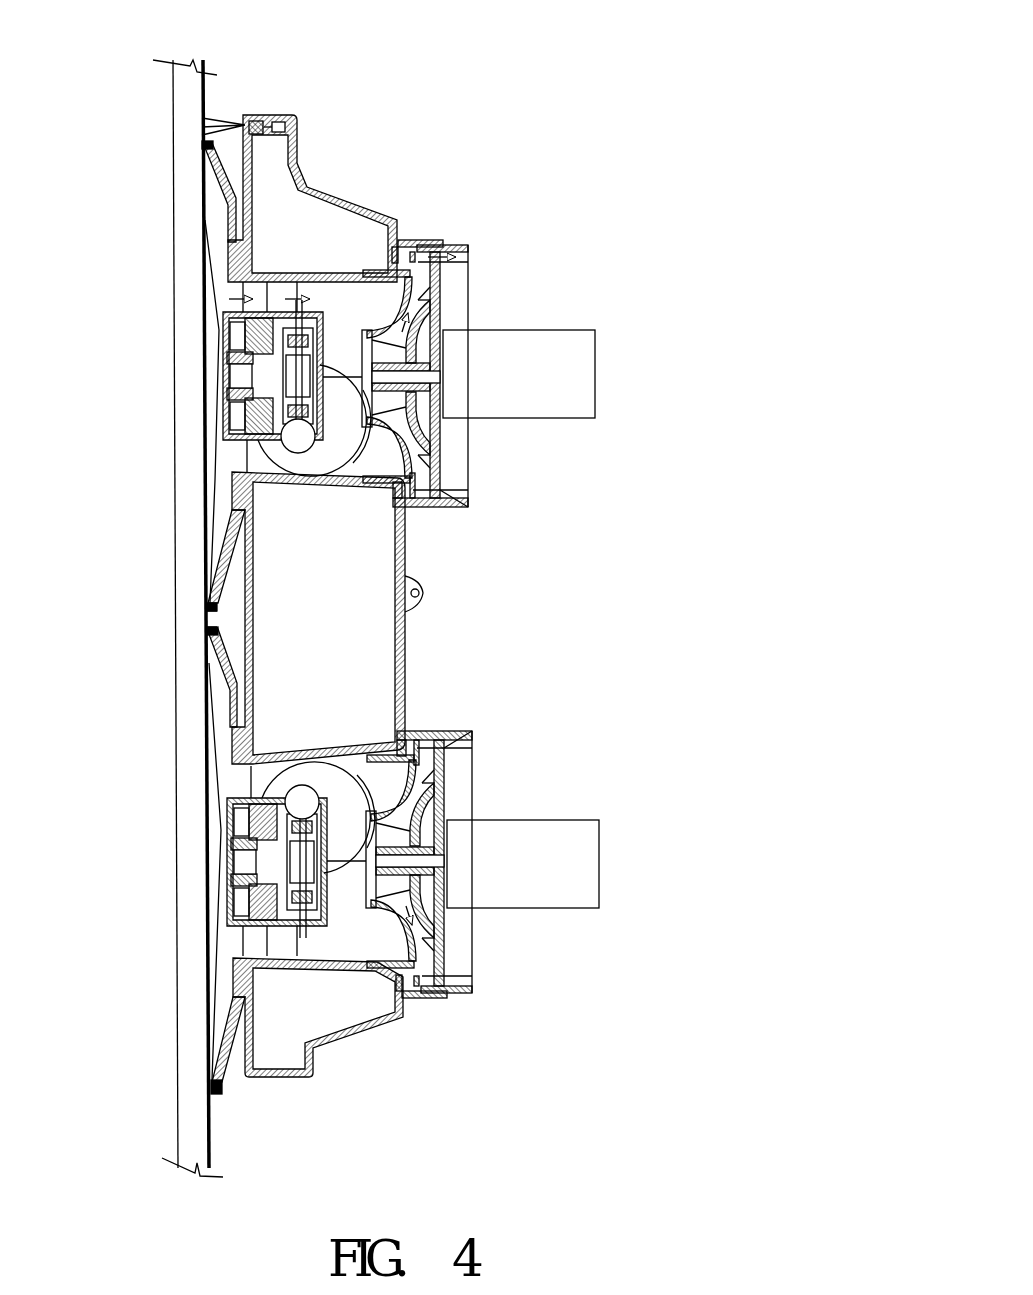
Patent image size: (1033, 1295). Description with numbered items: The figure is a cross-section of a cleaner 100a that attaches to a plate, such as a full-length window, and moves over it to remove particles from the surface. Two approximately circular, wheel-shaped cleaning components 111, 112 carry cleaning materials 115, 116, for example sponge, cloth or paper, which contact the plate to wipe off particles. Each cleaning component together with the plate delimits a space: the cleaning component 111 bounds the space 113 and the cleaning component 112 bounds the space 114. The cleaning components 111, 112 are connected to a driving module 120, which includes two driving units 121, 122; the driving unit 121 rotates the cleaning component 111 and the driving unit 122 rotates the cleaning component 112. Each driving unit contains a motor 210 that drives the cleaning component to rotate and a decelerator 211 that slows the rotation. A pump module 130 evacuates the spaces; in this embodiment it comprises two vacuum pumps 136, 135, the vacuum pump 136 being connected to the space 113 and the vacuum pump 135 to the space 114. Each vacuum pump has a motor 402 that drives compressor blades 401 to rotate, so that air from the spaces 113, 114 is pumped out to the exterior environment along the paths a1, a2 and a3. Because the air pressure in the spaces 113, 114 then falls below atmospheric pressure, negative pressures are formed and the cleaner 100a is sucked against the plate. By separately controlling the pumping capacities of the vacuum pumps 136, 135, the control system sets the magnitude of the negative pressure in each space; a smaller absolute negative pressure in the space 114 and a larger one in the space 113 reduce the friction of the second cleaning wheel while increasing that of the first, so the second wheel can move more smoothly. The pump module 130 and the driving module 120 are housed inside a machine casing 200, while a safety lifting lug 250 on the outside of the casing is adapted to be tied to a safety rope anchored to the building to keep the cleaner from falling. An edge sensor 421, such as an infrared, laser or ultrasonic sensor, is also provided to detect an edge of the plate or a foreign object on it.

The cleaner 100a is at (741, 79).
The machine casing 200 is at (322, 192).
The edge sensor 421 is at (263, 120).
The cleaning material 115 is at (205, 150).
The cleaning component 111 is at (228, 208).
The space 113 is at (213, 368).
The cleaning material 116 is at (207, 640).
The cleaning component 112 is at (233, 700).
The space 114 is at (215, 853).
The path a1 is at (229, 299).
The path a2 is at (343, 343).
The path a3 is at (470, 257).
The compressor blades 401 is at (470, 312).
The motor 402 is at (538, 332).
The vacuum pump 136 is at (630, 242).
The vacuum pump 135 is at (638, 925).
The pump module 130 is at (405, 619).
The motor 210 is at (413, 468).
The decelerator 211 is at (443, 418).
The driving unit 121 is at (556, 432).
The driving unit 122 is at (556, 738).
The driving module 120 is at (344, 619).
The safety lifting lug 250 is at (424, 593).